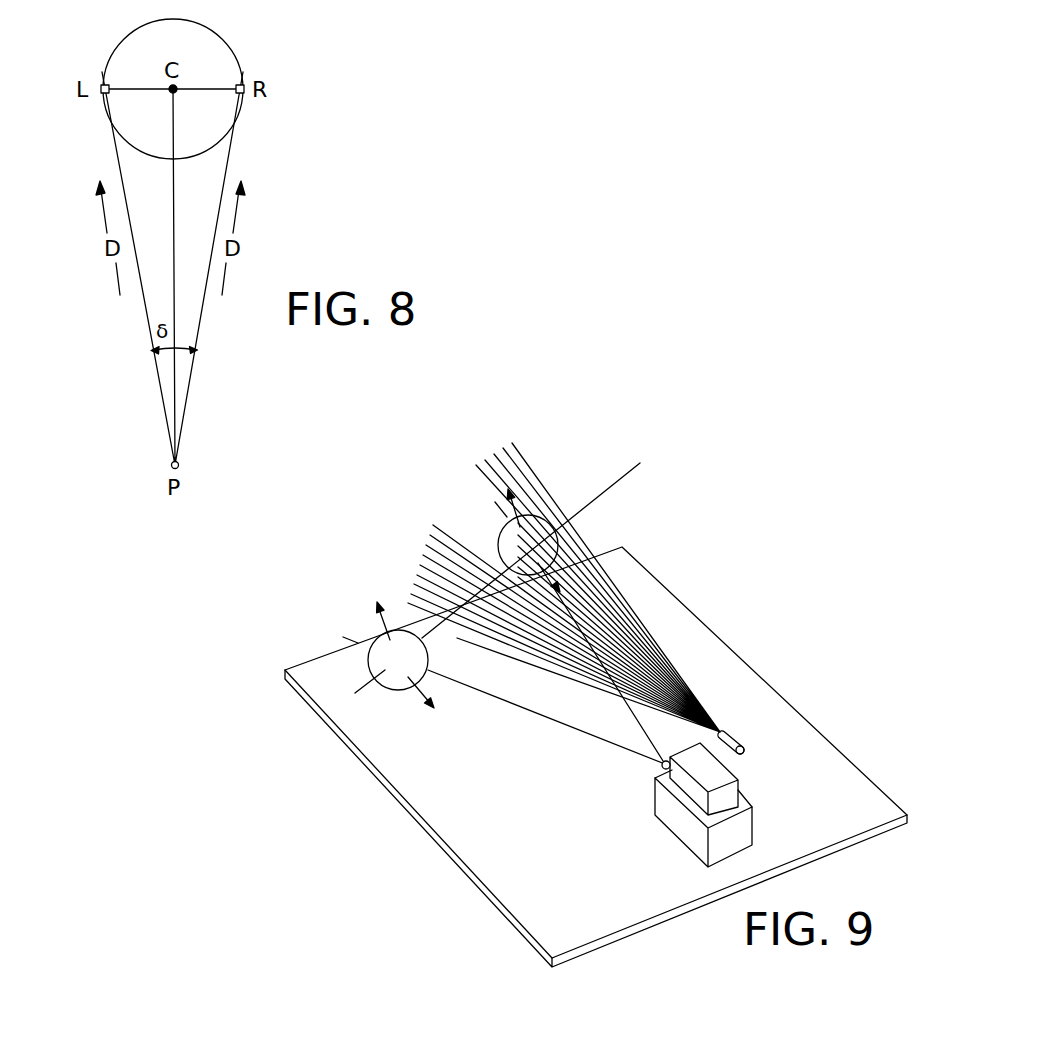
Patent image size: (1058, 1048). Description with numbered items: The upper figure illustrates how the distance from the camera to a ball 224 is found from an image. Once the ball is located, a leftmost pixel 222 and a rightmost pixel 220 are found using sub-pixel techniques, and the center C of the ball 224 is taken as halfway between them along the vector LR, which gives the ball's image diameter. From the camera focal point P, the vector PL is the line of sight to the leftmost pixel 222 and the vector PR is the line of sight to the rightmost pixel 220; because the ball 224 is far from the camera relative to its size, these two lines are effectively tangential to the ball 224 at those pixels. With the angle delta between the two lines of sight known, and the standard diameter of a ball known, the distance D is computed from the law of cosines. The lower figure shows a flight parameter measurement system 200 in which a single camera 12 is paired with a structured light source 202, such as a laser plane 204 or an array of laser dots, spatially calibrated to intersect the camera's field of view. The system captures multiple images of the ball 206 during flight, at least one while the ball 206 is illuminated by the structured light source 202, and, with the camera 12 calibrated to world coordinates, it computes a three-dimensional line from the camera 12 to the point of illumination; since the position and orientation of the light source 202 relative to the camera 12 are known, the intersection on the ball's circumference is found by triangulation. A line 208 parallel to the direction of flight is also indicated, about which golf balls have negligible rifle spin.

In FIG. 9, the camera 12 is at (740, 783).
In FIG. 9, the calibration system 200 is at (745, 618).
In FIG. 9, the structured light source 202 is at (745, 745).
In FIG. 9, the laser plane 204 is at (520, 453).
In FIG. 9, the ball 206 is at (387, 690).
In FIG. 9, the axis 208 is at (627, 477).
In FIG. 8, the rightmost pixel 220 is at (242, 80).
In FIG. 8, the leftmost pixel 222 is at (103, 82).
In FIG. 8, the ball 224 is at (232, 50).